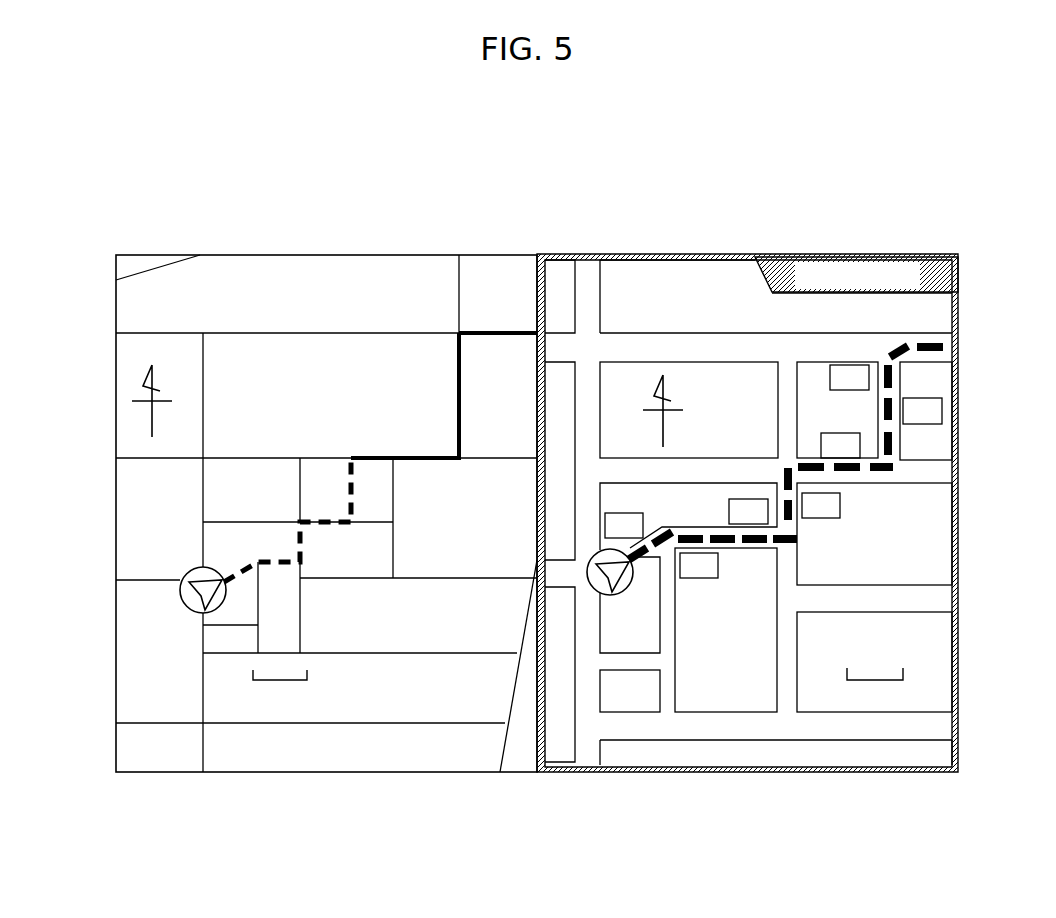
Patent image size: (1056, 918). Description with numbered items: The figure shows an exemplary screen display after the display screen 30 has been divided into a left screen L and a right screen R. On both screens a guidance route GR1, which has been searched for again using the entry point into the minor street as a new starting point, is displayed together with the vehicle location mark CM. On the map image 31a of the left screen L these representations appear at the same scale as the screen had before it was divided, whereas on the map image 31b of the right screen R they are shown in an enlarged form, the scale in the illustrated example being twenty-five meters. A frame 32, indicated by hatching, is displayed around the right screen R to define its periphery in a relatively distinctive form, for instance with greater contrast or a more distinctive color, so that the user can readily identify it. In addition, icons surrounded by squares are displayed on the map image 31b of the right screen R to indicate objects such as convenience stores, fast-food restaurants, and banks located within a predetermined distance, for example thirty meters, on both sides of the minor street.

The display screen 30 is at (116, 165).
The map image 31a is at (393, 775).
The map image 31b is at (755, 775).
The frame 32 is at (955, 270).
The guidance route GR1 is at (450, 389).
The vehicle location mark CM is at (181, 598).
The left screen L is at (116, 232).
The right screen R is at (543, 232).